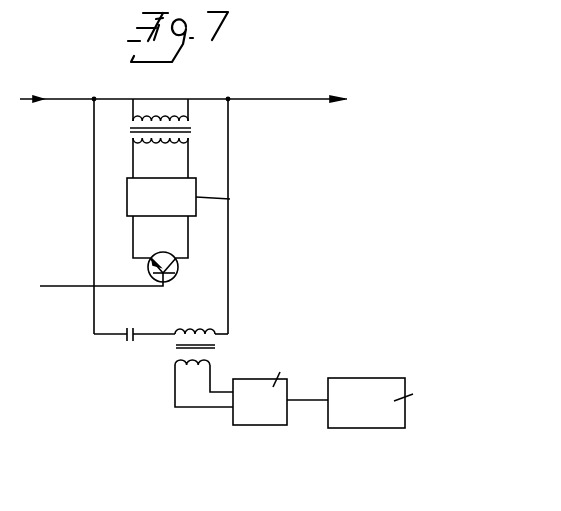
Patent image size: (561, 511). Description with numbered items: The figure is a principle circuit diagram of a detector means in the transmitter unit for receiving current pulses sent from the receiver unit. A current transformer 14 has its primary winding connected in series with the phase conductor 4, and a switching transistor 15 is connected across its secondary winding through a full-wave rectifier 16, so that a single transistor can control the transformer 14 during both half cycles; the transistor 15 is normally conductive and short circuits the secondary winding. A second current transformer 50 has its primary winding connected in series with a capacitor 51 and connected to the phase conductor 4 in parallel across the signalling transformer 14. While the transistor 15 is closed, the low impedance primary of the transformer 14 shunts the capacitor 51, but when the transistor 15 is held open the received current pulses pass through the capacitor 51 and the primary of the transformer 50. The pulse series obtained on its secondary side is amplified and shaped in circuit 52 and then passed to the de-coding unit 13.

The phase conductor 4 is at (59, 99).
The current transformer 14 is at (130, 130).
The full-wave rectifier 16 is at (127, 198).
The switching transistor 15 is at (149, 266).
The capacitor 51 is at (131, 345).
The current transformer 50 is at (217, 347).
The amplification and pulse shaping circuit 52 is at (262, 424).
The de-coding unit 13 is at (361, 428).